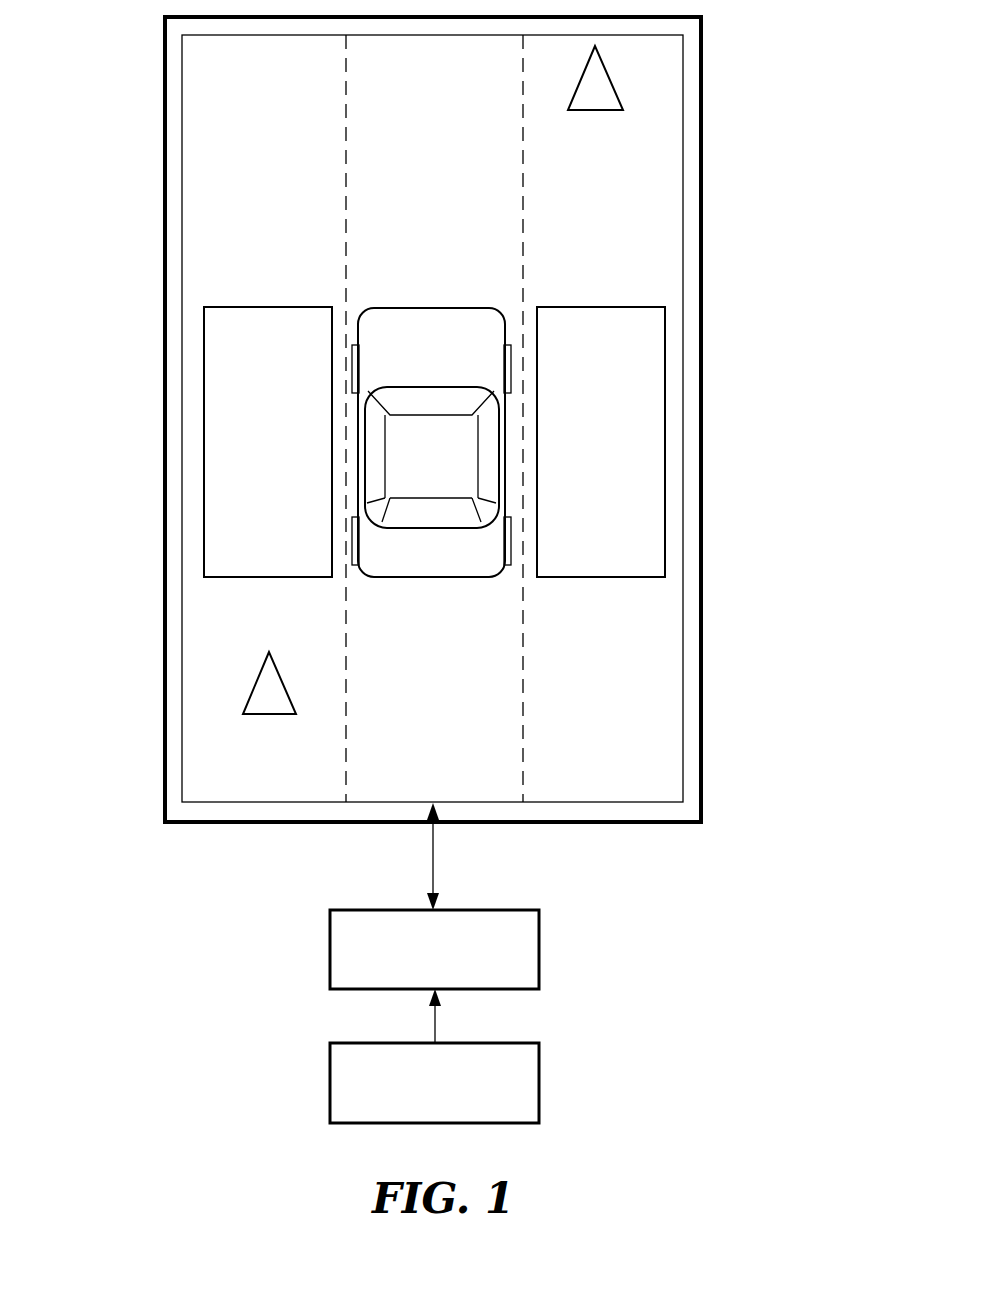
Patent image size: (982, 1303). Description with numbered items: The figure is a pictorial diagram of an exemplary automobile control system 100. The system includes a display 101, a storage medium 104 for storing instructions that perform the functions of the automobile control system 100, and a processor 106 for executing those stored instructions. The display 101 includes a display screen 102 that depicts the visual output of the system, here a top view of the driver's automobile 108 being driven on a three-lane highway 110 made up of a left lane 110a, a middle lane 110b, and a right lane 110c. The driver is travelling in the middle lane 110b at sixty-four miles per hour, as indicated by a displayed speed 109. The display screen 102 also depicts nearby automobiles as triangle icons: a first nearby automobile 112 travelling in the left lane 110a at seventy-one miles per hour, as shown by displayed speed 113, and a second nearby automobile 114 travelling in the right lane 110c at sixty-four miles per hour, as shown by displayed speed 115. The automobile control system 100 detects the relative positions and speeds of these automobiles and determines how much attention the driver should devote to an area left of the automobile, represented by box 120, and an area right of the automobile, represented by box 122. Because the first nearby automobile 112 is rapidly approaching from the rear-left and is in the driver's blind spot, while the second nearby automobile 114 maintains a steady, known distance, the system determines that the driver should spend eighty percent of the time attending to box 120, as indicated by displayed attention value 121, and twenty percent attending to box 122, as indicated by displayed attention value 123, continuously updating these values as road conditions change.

The automobile control system 100 is at (80, 232).
The display 101 is at (165, 24).
The display screen 102 is at (170, 88).
The storage medium 104 is at (539, 1070).
The processor 106 is at (539, 945).
The driver's automobile 108 is at (413, 308).
The displayed speed 109 is at (417, 622).
The three-lane highway 110 is at (672, 700).
The left lane 110a is at (285, 778).
The middle lane 110b is at (398, 778).
The right lane 110c is at (660, 778).
The first nearby automobile 112 is at (258, 672).
The displayed speed 113 is at (218, 728).
The second nearby automobile 114 is at (607, 62).
The displayed speed 115 is at (647, 130).
The box 120 is at (204, 372).
The displayed attention value 121 is at (223, 430).
The box 122 is at (665, 432).
The displayed attention value 123 is at (648, 382).